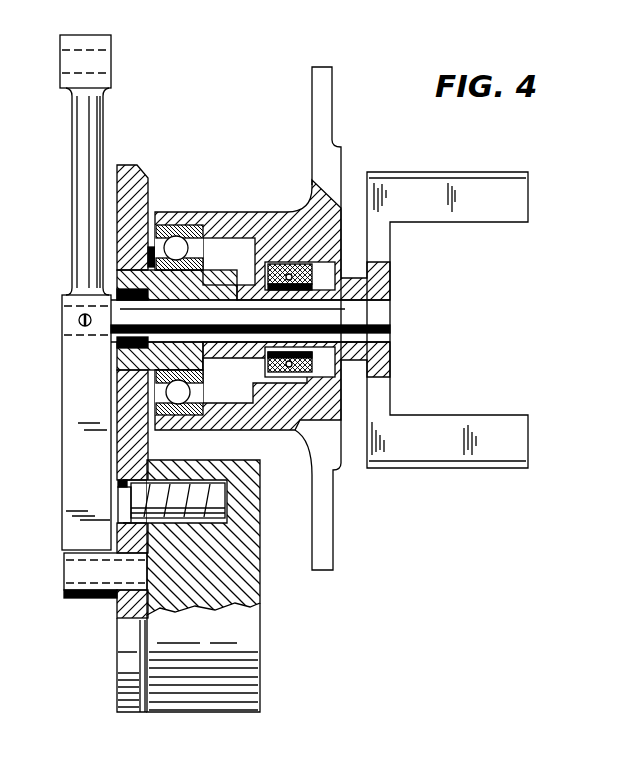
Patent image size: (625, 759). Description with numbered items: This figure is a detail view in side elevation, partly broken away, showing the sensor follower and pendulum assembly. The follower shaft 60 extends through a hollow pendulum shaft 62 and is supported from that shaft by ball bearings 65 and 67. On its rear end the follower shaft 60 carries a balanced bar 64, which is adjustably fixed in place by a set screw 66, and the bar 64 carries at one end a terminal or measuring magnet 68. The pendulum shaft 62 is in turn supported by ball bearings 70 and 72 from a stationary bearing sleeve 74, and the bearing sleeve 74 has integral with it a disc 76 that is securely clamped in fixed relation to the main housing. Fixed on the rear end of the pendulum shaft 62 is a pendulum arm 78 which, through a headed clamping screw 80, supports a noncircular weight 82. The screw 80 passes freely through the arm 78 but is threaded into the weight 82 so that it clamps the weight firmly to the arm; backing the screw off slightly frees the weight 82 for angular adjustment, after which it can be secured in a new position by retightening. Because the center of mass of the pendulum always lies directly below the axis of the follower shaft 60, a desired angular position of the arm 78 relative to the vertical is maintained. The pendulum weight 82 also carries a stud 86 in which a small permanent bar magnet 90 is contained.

The terminal or measuring magnet 68 is at (63, 60).
The balanced bar 64 is at (77, 194).
The pendulum shaft 62 is at (122, 283).
The set screw 66 is at (80, 320).
The ball bearing 67 is at (120, 346).
The ball bearing 70 is at (178, 238).
The bearing sleeve 74 is at (200, 212).
The follower shaft 60 is at (234, 305).
The ball bearing 72 is at (273, 267).
The ball bearing 65 is at (309, 268).
The disc 76 is at (328, 108).
The headed clamping screw 80 is at (180, 492).
The noncircular weight 82 is at (250, 643).
The pendulum arm 78 is at (130, 668).
The stud 86 is at (62, 594).
The permanent bar magnet 90 is at (66, 573).